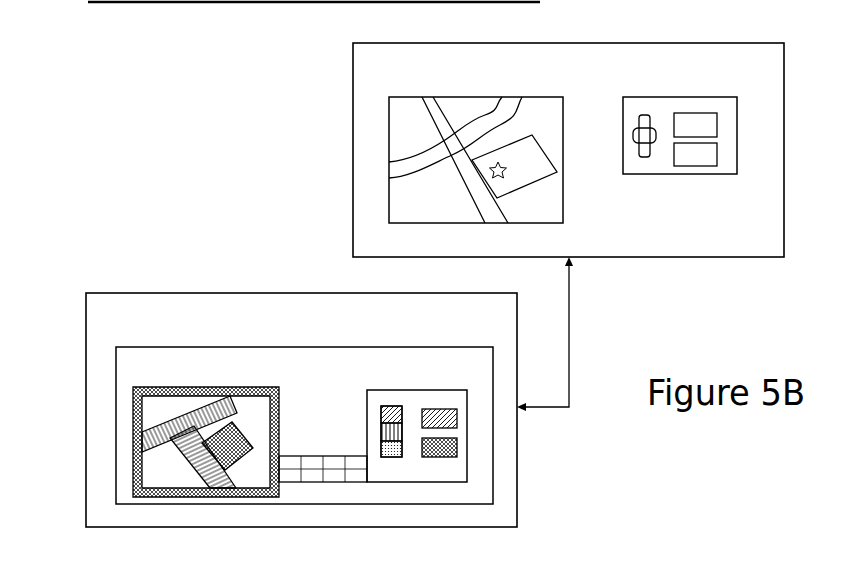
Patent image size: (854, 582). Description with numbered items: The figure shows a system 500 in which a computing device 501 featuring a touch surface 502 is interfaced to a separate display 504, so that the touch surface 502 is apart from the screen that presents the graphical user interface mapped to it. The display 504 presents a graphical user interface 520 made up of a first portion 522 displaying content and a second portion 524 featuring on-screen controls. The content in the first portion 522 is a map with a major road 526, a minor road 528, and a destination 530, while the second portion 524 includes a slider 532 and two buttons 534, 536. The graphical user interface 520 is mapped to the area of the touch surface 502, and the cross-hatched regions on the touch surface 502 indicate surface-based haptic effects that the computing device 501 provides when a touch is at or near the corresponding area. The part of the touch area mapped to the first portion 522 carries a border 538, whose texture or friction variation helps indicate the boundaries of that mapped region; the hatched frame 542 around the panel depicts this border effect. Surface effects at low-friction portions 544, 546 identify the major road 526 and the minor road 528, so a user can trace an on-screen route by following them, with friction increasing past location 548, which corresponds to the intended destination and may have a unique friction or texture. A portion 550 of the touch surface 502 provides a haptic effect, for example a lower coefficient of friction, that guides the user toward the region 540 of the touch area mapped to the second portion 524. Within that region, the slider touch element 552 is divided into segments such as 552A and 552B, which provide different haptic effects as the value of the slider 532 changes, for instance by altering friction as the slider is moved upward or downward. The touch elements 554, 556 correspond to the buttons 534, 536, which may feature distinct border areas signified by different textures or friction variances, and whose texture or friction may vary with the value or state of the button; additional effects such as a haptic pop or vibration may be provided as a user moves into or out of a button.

The system 500 is at (157, 88).
The computing device 501 is at (412, 321).
The touch surface 502 is at (395, 376).
The display 504 is at (625, 74).
The graphical user interface 520 is at (679, 72).
The first portion 522 is at (389, 110).
The second portion 524 is at (737, 101).
The major road 526 is at (497, 108).
The minor road 528 is at (472, 178).
The destination 530 is at (520, 180).
The slider 532 is at (644, 158).
The button 534 is at (717, 125).
The button 536 is at (717, 160).
The border 538 is at (152, 402).
The control region 540 is at (453, 389).
The border 542 is at (133, 497).
The low-friction portion 544 is at (190, 408).
The low-friction portion 546 is at (202, 478).
The location 548 is at (233, 441).
The portion 550 is at (340, 483).
The slider touch element 552 is at (392, 408).
The haptic effect region 552A is at (390, 458).
The haptic effect region 552B is at (381, 432).
The button touch element 554 is at (457, 419).
The button touch element 556 is at (457, 448).